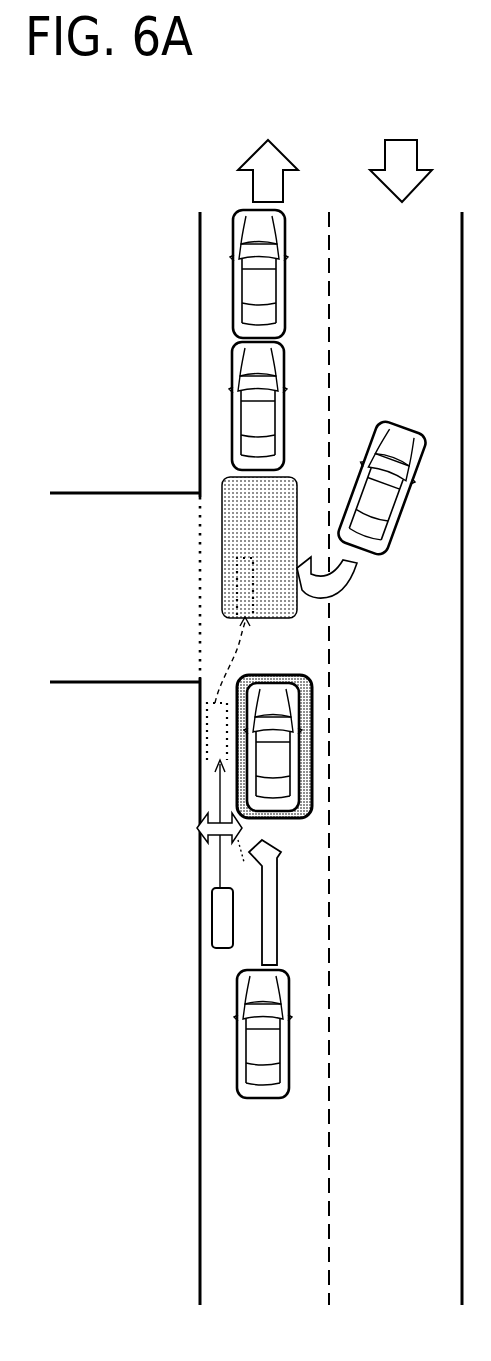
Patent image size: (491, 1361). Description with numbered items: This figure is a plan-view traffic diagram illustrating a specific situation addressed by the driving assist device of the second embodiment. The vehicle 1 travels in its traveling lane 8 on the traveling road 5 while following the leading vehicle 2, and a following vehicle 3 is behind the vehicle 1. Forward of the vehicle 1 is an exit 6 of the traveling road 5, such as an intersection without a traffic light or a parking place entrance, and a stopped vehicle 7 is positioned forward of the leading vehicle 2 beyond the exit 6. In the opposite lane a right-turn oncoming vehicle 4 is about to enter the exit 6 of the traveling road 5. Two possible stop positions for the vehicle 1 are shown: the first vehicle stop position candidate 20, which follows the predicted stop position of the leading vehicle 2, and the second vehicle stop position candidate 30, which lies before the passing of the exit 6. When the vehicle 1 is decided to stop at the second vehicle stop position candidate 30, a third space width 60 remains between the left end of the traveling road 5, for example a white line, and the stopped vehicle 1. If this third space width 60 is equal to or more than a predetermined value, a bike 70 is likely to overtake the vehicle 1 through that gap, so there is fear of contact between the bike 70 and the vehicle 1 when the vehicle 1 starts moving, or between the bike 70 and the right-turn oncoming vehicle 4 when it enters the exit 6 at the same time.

The vehicle 1 is at (312, 775).
The leading vehicle 2 is at (232, 412).
The following vehicle 3 is at (237, 1018).
The right-turn oncoming vehicle 4 is at (385, 426).
The traveling road 5 is at (200, 1252).
The exit of the traveling road 6 is at (200, 522).
The stopped vehicle 7 is at (233, 278).
The traveling lane 8 is at (245, 1195).
The first vehicle stop position candidate 20 is at (222, 557).
The second vehicle stop position candidate 30 is at (312, 700).
The third space width 60 is at (200, 826).
The bike 70 is at (243, 597).